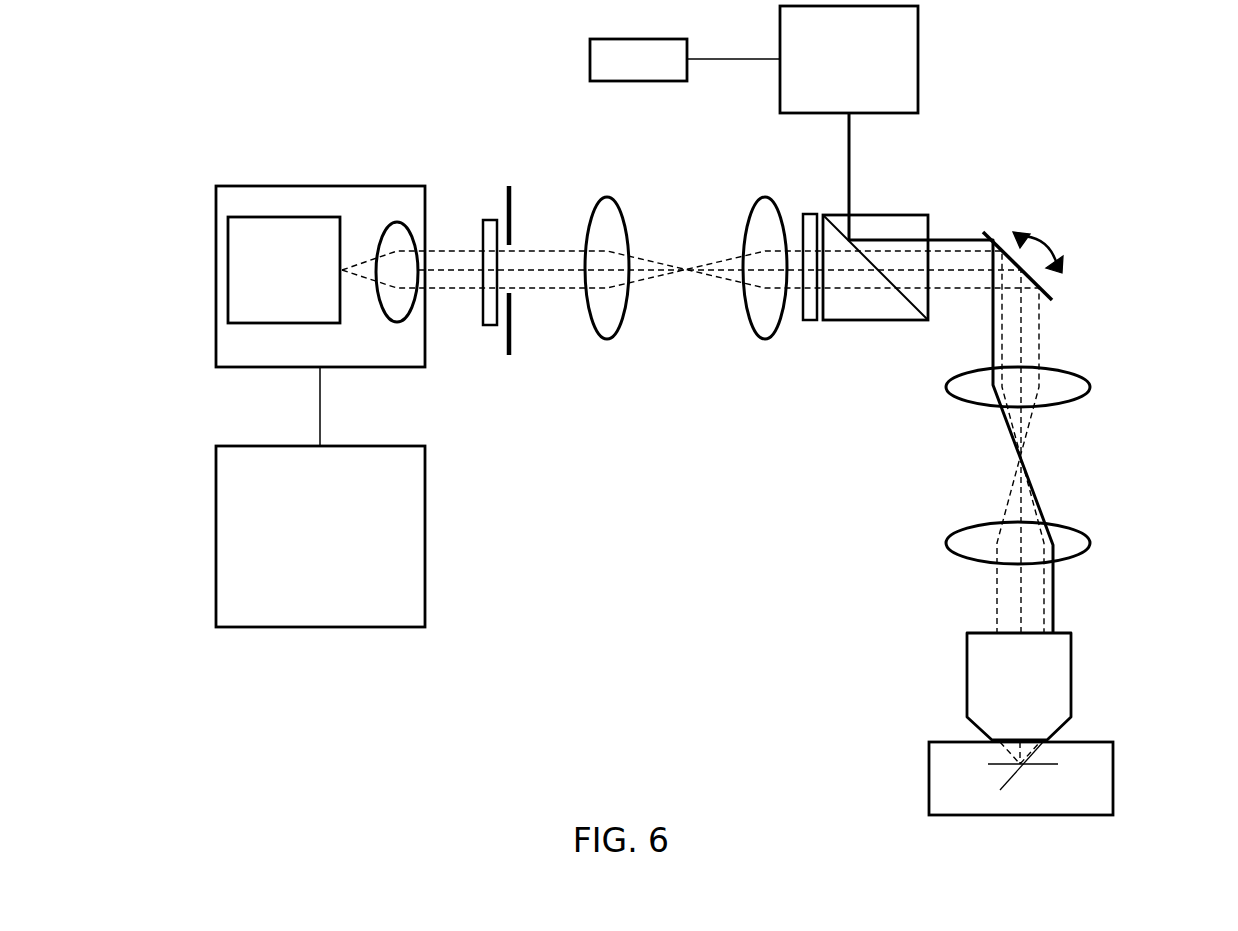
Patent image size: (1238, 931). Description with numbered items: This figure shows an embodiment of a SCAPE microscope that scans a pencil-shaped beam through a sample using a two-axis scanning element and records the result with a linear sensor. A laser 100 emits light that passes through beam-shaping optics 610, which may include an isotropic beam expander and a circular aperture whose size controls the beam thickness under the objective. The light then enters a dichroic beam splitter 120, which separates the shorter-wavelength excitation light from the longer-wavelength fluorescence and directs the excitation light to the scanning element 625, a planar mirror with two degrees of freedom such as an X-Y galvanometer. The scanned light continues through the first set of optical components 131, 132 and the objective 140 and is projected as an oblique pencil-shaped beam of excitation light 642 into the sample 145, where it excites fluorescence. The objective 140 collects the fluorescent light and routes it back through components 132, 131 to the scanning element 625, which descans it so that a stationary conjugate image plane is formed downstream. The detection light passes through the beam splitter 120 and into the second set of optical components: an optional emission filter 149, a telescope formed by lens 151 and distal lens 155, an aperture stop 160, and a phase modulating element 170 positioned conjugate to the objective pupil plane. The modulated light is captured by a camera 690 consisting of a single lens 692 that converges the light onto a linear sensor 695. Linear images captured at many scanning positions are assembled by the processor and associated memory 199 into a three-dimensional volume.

The laser 100 is at (608, 39).
The beam-shaping optics 610 is at (918, 55).
The dichroic beam splitter 120 is at (927, 215).
The scanning element 625 is at (1053, 297).
The first optical component of first set 131 is at (1083, 402).
The second optical component of first set 132 is at (1085, 555).
The objective 140 is at (1071, 682).
The sample 145 is at (1113, 777).
The pencil-shaped beam of excitation light 642 is at (1012, 782).
The emission filter 149 is at (810, 320).
The lens 151 is at (763, 197).
The distal lens 155 is at (608, 198).
The aperture stop 160 is at (513, 182).
The phase modulating element 170 is at (497, 220).
The camera 690 is at (310, 186).
The single lens 692 is at (395, 222).
The linear sensor 695 is at (255, 217).
The processor and associated memory 199 is at (232, 446).